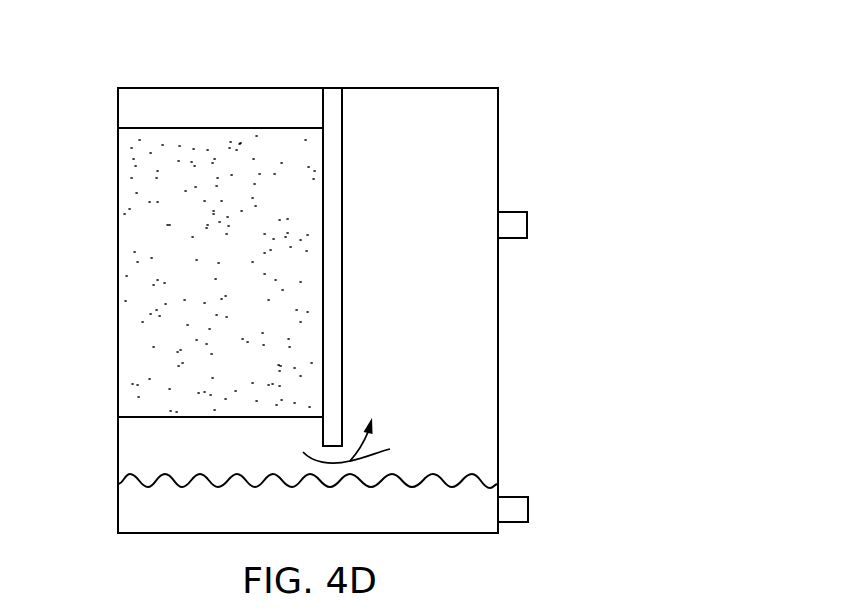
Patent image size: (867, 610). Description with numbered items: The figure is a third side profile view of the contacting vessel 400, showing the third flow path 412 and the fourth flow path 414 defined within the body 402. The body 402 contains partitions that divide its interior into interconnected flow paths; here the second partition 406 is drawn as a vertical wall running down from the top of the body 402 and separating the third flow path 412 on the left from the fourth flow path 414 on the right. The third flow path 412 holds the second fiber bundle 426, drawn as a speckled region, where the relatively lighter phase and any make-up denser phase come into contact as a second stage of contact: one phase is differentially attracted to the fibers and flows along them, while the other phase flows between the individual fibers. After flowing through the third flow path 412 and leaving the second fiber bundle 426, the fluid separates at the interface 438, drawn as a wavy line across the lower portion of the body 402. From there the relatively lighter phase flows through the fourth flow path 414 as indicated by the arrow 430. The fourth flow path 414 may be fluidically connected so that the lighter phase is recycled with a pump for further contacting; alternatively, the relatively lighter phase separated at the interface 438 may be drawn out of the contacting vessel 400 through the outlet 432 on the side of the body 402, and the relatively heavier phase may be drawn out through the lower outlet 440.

The contacting vessel 400 is at (632, 48).
The body 402 is at (498, 162).
The second partition 406 is at (335, 93).
The third flow path 412 is at (211, 108).
The fourth flow path 414 is at (422, 105).
The second fiber bundle 426 is at (140, 253).
The arrow 430 is at (373, 442).
The outlet 432 is at (513, 212).
The interface 438 is at (472, 472).
The outlet 440 is at (528, 507).